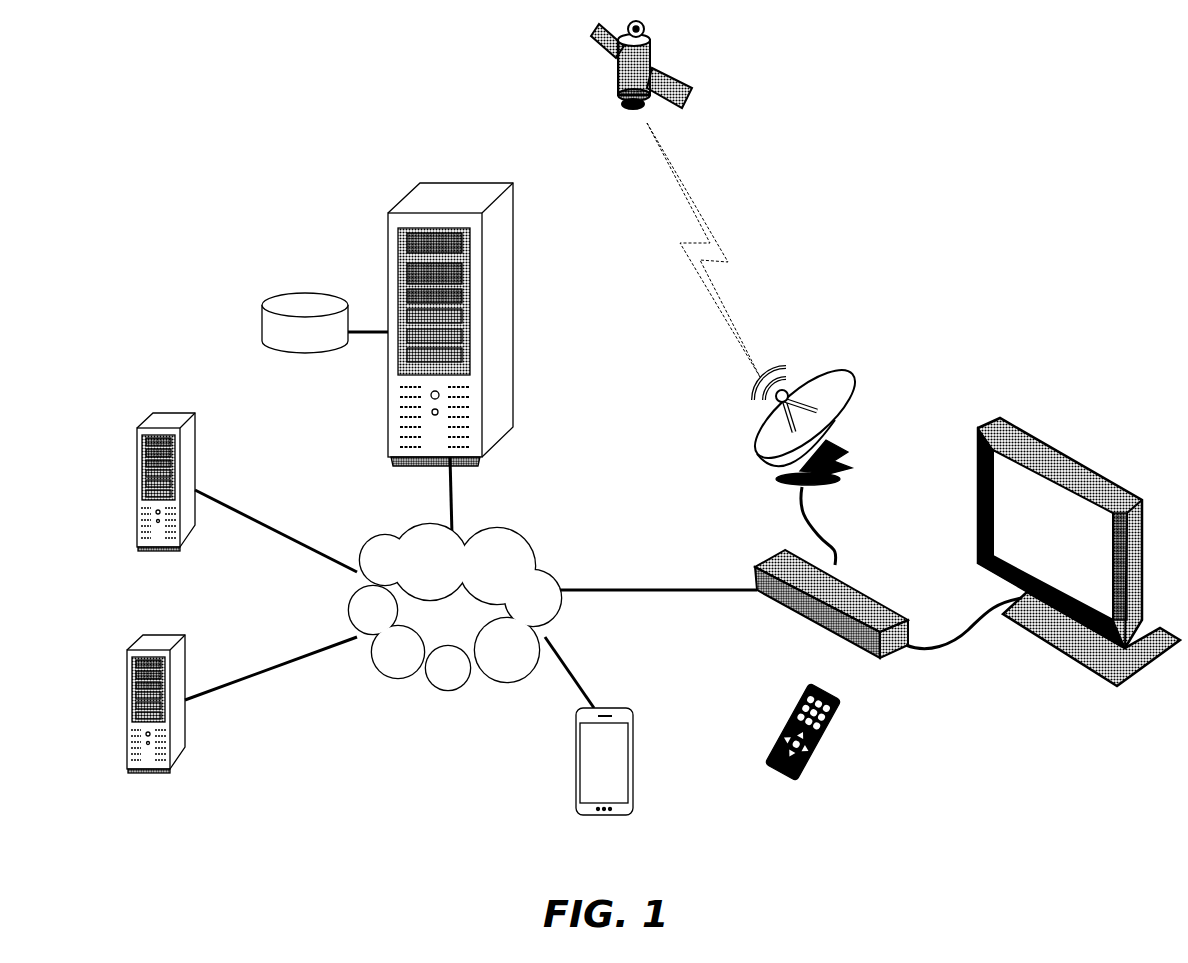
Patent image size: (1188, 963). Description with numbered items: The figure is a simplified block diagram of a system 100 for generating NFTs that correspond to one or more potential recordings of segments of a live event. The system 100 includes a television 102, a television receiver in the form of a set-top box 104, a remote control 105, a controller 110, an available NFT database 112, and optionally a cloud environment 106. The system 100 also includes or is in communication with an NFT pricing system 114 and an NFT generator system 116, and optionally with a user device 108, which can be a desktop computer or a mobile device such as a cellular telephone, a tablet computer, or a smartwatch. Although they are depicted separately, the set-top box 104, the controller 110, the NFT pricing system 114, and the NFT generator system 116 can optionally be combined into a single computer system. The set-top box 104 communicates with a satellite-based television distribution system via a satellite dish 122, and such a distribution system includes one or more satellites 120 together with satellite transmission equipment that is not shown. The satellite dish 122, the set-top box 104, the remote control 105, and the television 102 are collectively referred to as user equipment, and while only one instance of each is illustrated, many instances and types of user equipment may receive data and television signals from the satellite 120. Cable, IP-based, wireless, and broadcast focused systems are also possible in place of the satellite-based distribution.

The system 100 is at (200, 128).
The television 102 is at (1050, 435).
The set-top box 104 is at (850, 650).
The remote control 105 is at (818, 752).
The cloud environment 106 is at (440, 690).
The user device 108 is at (635, 748).
The controller 110 is at (420, 203).
The available NFT database 112 is at (266, 320).
The NFT pricing system 114 is at (137, 432).
The NFT generator system 116 is at (127, 665).
The satellite 120 is at (672, 73).
The satellite dish 122 is at (850, 378).